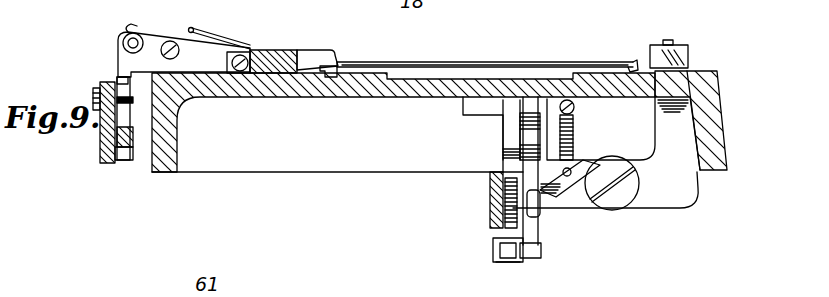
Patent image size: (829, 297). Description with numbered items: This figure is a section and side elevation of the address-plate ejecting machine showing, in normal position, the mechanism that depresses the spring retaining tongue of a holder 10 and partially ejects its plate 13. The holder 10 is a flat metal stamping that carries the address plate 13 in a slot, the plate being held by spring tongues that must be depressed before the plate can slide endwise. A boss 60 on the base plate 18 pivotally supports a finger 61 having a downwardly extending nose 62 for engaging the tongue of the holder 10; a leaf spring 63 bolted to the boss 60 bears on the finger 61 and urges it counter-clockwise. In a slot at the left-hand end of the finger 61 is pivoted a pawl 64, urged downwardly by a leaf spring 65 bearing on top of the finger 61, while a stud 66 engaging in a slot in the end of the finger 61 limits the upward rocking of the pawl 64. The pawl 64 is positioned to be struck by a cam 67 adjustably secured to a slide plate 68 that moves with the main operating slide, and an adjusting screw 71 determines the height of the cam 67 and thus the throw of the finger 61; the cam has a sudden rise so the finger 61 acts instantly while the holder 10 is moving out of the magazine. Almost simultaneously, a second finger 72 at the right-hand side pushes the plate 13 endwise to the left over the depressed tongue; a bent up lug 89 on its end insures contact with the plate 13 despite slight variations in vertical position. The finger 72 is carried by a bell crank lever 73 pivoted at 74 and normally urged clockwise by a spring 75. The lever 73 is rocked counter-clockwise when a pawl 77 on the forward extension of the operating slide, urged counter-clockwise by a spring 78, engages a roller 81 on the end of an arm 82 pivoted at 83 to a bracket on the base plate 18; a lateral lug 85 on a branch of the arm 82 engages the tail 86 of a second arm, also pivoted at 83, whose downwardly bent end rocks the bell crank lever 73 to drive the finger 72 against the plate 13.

The holder 10 is at (490, 70).
The plate 13 is at (447, 61).
The base plate 18 is at (300, 158).
The boss 60 is at (283, 50).
The finger 61 is at (305, 50).
The nose 62 is at (338, 66).
The leaf spring 63 is at (200, 31).
The pawl 64 is at (122, 63).
The leaf spring 65 is at (138, 19).
The stud 66 is at (126, 40).
The cam 67 is at (115, 83).
The slide plate 68 is at (108, 158).
The adjusting screw 71 is at (124, 133).
The second finger 72 is at (652, 50).
The bell crank lever 73 is at (685, 58).
The pivot 74 is at (614, 167).
The spring 75 is at (573, 128).
The pawl 77 is at (505, 238).
The spring 78 is at (503, 195).
The roller 81 is at (510, 262).
The arm 82 is at (528, 260).
The pivot 83 is at (545, 118).
The lateral lug 85 is at (535, 240).
The tail 86 is at (540, 205).
The bent up lug 89 is at (630, 57).